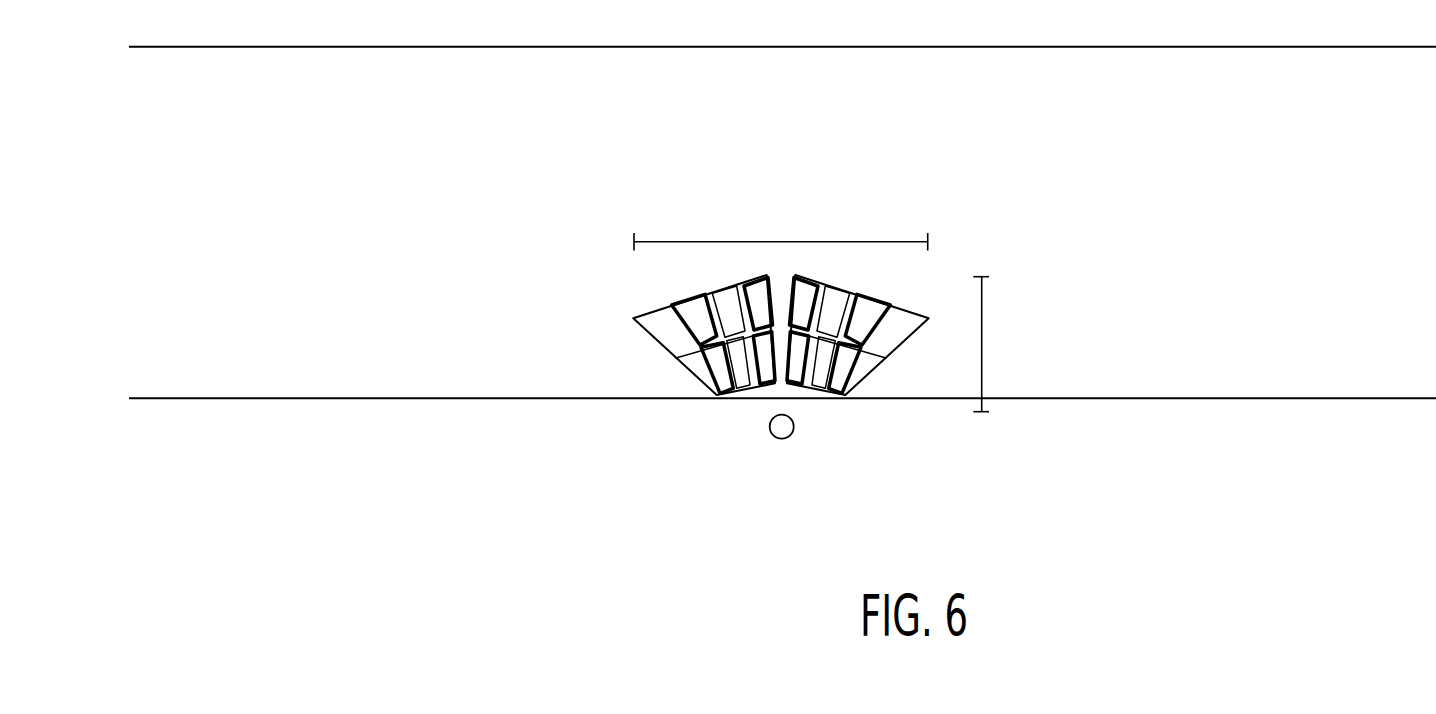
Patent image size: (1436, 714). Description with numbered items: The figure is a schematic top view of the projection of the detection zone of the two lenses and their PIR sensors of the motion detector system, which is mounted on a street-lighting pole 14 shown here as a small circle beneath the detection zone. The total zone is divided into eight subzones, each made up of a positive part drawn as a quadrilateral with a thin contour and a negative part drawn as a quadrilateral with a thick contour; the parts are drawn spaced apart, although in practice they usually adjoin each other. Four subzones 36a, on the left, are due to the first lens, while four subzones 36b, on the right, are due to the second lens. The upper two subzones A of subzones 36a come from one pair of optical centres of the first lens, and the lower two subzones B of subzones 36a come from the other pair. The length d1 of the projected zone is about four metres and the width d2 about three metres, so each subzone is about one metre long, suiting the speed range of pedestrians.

The subzones 36a is at (769, 273).
The subzones 36b is at (858, 320).
The pole 14 is at (781, 428).
The upper two subzones A is at (617, 347).
The lower two subzones B is at (662, 384).
The length of the projection of the total detection zone d1 is at (781, 230).
The width of the projection of the total detection zone d2 is at (992, 344).